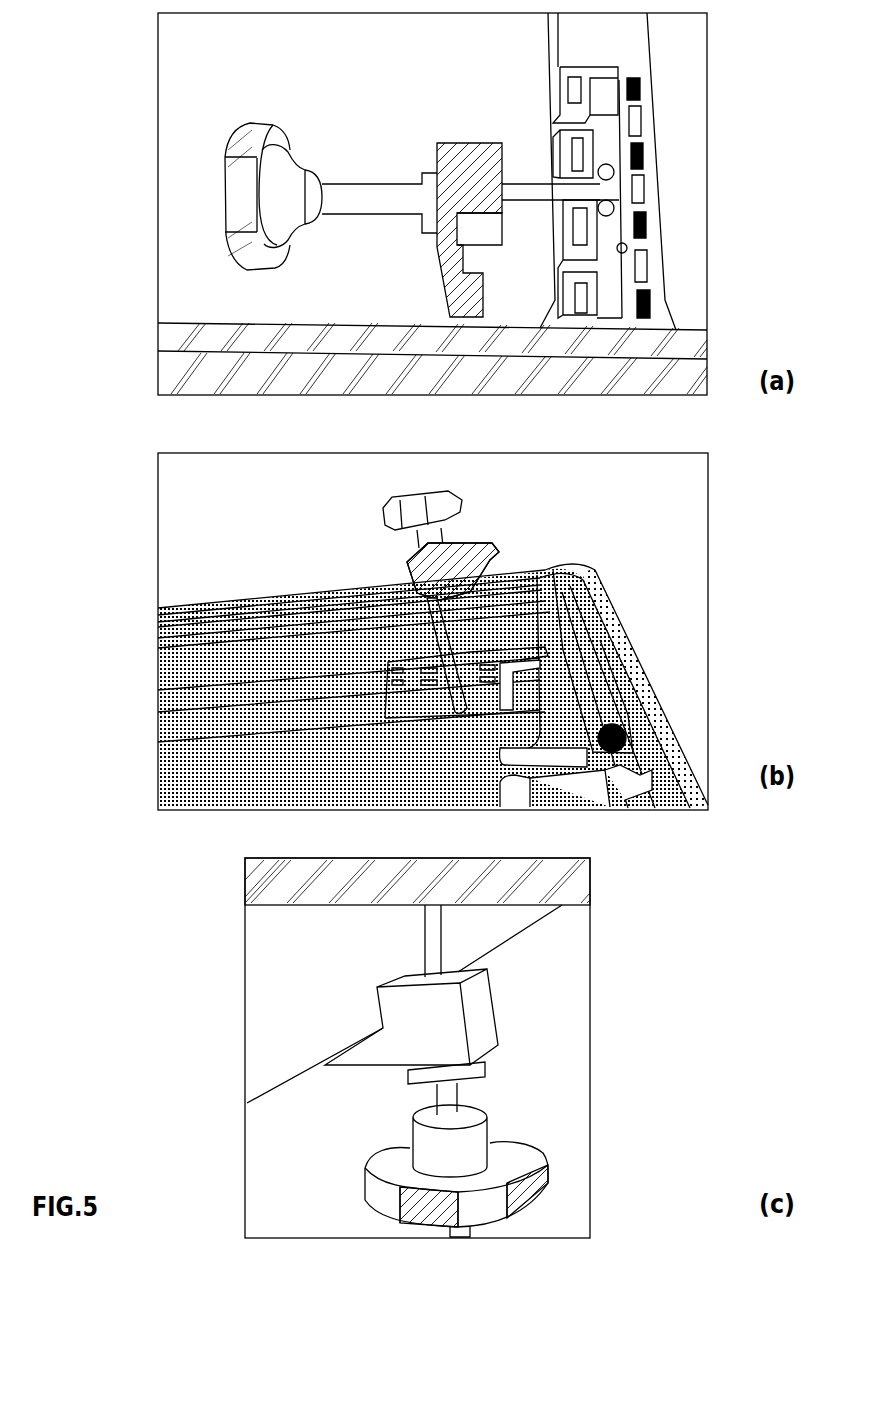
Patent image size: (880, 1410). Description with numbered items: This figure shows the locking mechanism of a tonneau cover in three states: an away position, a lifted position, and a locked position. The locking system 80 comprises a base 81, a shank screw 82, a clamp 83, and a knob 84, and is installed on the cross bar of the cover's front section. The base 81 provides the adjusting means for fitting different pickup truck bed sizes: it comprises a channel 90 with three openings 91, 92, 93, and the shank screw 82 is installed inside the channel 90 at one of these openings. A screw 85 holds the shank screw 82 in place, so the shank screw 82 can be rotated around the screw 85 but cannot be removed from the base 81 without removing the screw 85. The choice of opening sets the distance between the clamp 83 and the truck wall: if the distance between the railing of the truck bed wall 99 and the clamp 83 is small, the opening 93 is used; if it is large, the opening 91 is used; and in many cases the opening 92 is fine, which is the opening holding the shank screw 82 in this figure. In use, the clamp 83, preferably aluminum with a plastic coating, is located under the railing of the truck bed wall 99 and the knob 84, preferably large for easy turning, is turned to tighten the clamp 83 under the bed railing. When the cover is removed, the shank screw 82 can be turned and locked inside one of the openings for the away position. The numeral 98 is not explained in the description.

The locking system 80 is at (99, 158).
The base 81 is at (650, 80).
The shank screw 82 is at (380, 217).
The clamp 83 is at (478, 170).
The knob 84 is at (238, 140).
The screw 85 is at (620, 182).
The channel 90 is at (620, 220).
The opening 91 is at (560, 135).
The opening 92 is at (558, 192).
The opening 93 is at (563, 270).
The housing 98 is at (729, 543).
The railing of the truck bed wall 99 is at (268, 1003).